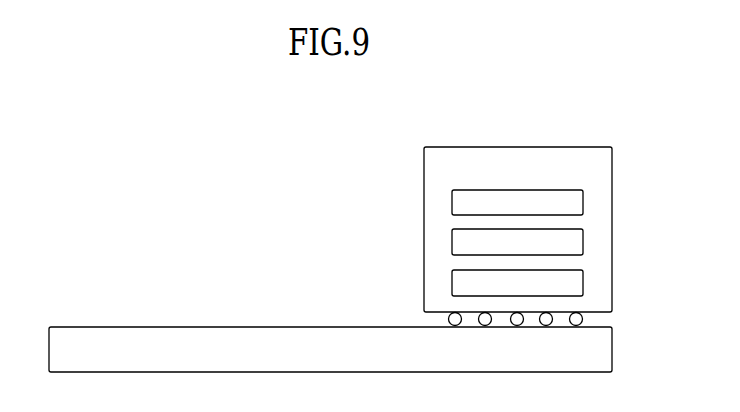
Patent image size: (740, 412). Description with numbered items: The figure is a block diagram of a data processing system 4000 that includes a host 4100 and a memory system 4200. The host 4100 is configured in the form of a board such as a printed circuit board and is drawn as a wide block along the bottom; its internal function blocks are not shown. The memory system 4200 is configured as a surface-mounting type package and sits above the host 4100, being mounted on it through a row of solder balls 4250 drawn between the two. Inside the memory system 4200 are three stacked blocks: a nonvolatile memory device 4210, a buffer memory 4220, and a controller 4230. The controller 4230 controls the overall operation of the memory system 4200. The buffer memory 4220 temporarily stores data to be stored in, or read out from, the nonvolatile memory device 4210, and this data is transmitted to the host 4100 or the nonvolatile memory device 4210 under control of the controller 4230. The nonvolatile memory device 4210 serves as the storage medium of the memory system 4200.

The data processing system 4000 is at (46, 122).
The host 4100 is at (330, 349).
The memory system 4200 is at (518, 229).
The nonvolatile memory device 4210 is at (517, 202).
The buffer memory 4220 is at (517, 242).
The controller 4230 is at (517, 283).
The solder balls 4250 is at (595, 320).